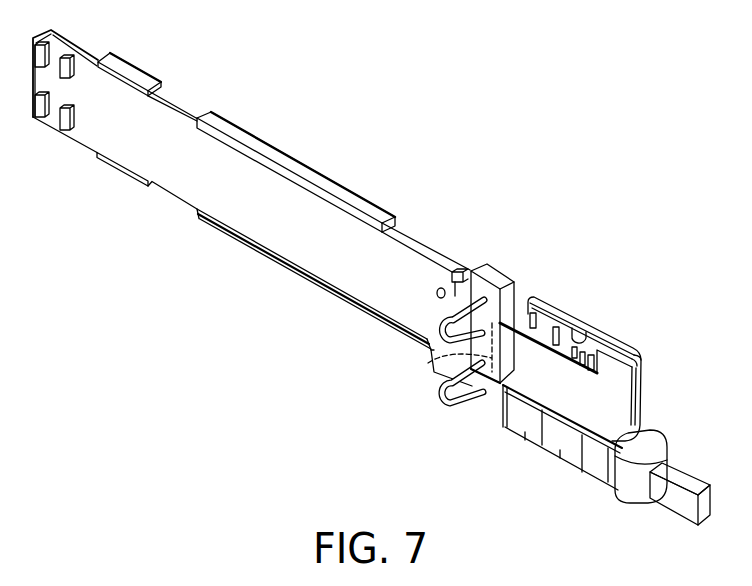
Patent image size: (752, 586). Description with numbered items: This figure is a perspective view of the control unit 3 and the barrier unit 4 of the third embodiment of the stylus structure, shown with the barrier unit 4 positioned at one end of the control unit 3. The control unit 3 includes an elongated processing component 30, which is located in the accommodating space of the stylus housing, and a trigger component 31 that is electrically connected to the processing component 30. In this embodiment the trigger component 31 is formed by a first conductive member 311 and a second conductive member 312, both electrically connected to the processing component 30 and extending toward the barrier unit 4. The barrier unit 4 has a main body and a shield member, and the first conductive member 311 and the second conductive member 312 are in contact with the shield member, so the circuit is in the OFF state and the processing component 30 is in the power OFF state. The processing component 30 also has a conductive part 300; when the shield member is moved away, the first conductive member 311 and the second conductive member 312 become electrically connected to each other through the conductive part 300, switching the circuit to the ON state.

The control unit 3 is at (284, 396).
The processing component 30 is at (342, 289).
The trigger component 31 is at (433, 344).
The conductive part 300 is at (428, 363).
The first conductive member 311 is at (446, 322).
The second conductive member 312 is at (471, 403).
The barrier unit 4 is at (544, 346).